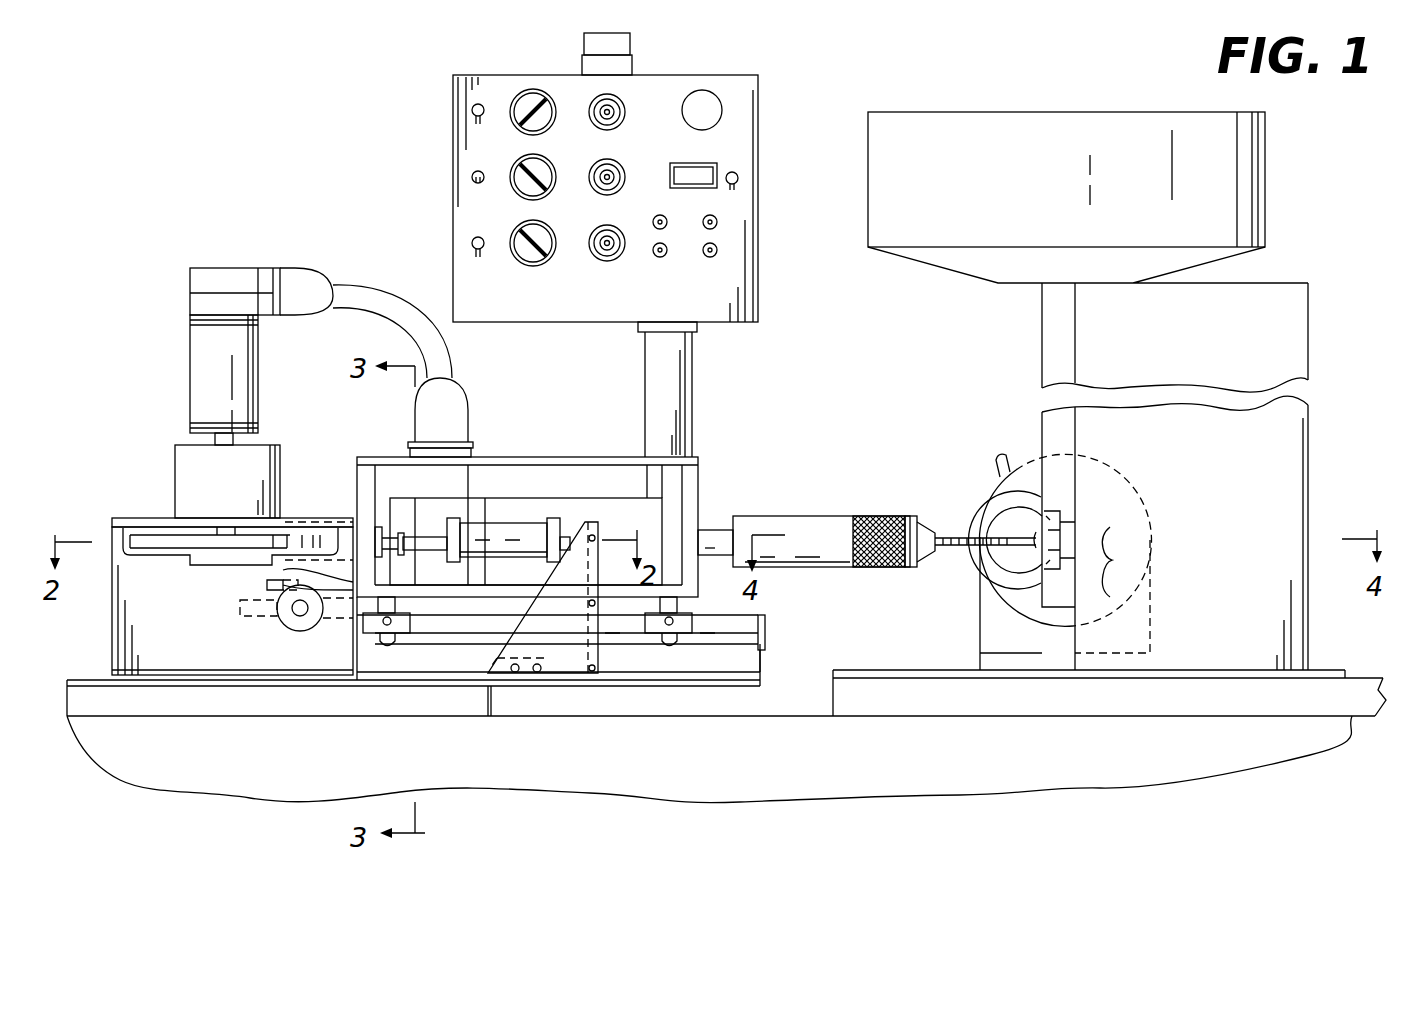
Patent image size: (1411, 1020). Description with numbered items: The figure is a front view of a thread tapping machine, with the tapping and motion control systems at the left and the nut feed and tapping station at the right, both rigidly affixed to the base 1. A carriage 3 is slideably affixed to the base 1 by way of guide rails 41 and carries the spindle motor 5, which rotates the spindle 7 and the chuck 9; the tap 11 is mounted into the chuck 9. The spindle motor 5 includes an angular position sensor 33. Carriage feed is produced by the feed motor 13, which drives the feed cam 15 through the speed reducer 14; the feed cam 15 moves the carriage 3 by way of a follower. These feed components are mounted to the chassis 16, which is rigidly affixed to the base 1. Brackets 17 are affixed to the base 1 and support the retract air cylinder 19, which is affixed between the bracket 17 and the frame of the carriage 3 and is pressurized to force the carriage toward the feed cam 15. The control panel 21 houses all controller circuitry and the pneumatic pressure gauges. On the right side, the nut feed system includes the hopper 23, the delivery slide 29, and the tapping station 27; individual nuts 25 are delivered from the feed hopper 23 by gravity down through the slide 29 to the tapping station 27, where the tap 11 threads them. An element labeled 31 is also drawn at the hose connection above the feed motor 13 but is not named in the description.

The base 1 is at (1006, 773).
The carriage 3 is at (700, 472).
The spindle motor 5 is at (623, 505).
The spindle 7 is at (720, 535).
The chuck 9 is at (835, 522).
The tap 11 is at (960, 548).
The feed motor 13 is at (203, 375).
The speed reducer 14 is at (190, 478).
The feed cam 15 is at (135, 540).
The chassis 16 is at (140, 645).
The bracket 17 is at (572, 655).
The retract air cylinder 19 is at (508, 528).
The control panel 21 is at (745, 105).
The hopper 23 is at (1248, 190).
The nut 25 is at (1060, 537).
The tapping station 27 is at (1112, 560).
The delivery slide 29 is at (1042, 352).
The connector 31 is at (190, 283).
The angular position sensor 33 is at (392, 473).
The guide rails 41 is at (770, 640).